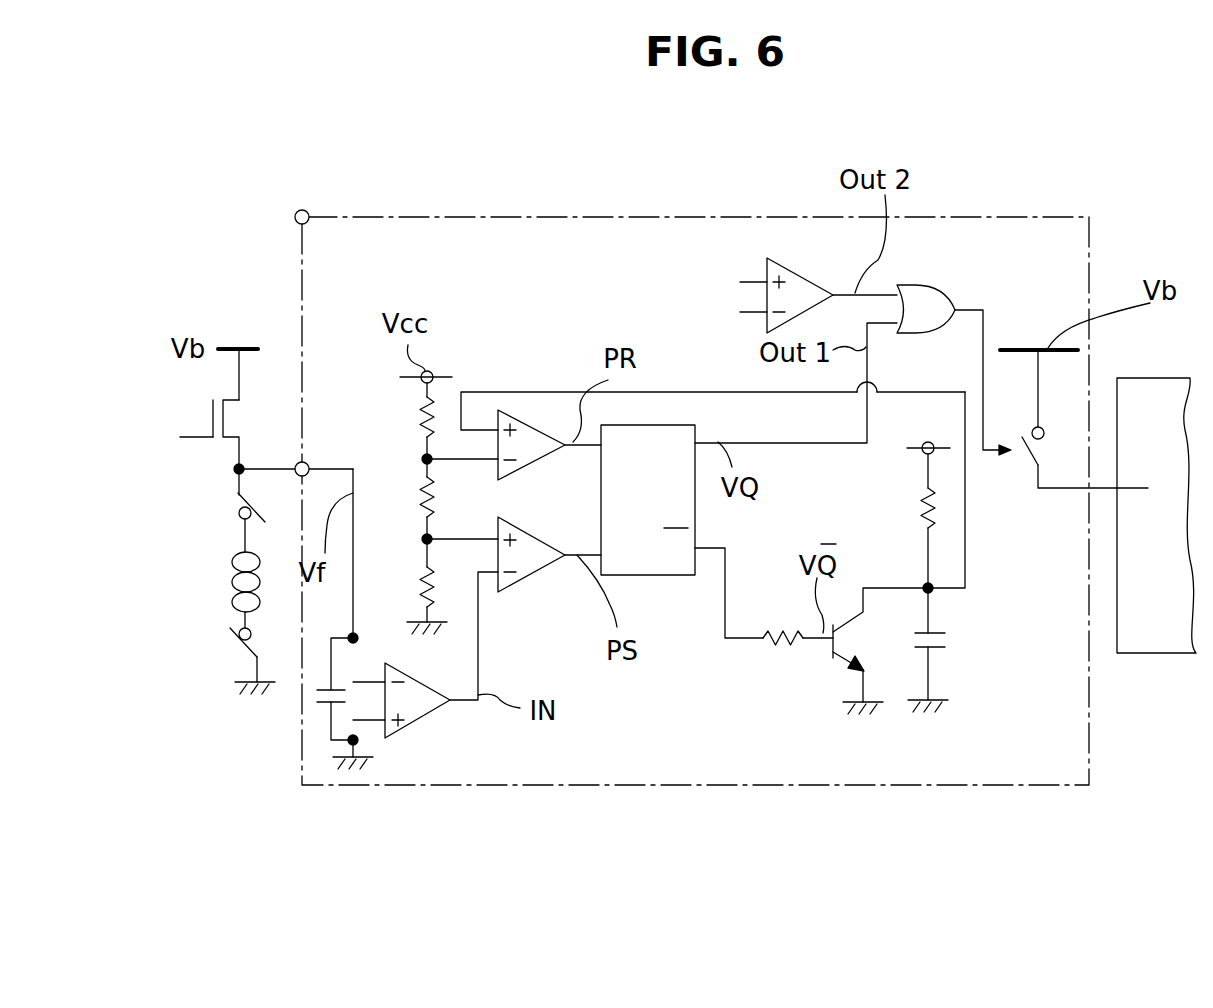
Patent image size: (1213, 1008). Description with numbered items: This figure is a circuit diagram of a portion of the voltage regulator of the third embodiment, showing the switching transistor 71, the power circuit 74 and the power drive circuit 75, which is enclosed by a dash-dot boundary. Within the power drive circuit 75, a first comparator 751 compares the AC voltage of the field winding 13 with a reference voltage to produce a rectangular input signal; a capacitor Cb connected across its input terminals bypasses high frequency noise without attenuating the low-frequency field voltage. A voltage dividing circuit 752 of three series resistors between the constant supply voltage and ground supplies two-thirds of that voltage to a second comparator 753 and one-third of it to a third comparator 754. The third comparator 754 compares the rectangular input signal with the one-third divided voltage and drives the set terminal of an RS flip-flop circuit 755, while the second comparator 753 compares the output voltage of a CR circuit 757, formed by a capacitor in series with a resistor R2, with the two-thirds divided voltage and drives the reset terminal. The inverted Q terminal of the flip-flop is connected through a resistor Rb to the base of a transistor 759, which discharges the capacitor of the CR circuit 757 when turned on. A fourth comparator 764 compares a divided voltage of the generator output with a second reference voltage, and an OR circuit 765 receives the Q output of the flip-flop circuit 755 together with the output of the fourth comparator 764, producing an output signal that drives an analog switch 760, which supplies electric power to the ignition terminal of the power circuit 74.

The field winding 13 is at (235, 650).
The switching transistor 71 is at (228, 422).
The power circuit 74 is at (1192, 635).
The power drive circuit 75 is at (1062, 786).
The first comparator 751 is at (415, 723).
The voltage dividing circuit 752 is at (358, 404).
The second comparator 753 is at (525, 420).
The third comparator 754 is at (550, 565).
The RS flip-flop circuit 755 is at (667, 575).
The CR circuit 757 is at (957, 663).
The transistor 759 is at (843, 677).
The analog switch 760 is at (1033, 475).
The fourth comparator 764 is at (787, 268).
The OR circuit 765 is at (937, 282).
The capacitor Cb is at (325, 705).
The resistor Rb is at (788, 650).
The resistor R2 is at (912, 515).